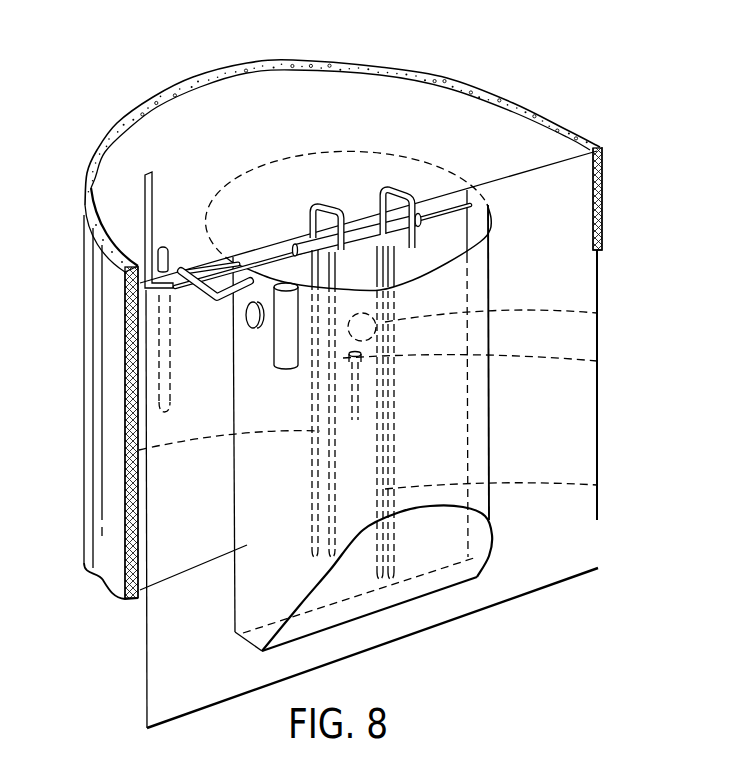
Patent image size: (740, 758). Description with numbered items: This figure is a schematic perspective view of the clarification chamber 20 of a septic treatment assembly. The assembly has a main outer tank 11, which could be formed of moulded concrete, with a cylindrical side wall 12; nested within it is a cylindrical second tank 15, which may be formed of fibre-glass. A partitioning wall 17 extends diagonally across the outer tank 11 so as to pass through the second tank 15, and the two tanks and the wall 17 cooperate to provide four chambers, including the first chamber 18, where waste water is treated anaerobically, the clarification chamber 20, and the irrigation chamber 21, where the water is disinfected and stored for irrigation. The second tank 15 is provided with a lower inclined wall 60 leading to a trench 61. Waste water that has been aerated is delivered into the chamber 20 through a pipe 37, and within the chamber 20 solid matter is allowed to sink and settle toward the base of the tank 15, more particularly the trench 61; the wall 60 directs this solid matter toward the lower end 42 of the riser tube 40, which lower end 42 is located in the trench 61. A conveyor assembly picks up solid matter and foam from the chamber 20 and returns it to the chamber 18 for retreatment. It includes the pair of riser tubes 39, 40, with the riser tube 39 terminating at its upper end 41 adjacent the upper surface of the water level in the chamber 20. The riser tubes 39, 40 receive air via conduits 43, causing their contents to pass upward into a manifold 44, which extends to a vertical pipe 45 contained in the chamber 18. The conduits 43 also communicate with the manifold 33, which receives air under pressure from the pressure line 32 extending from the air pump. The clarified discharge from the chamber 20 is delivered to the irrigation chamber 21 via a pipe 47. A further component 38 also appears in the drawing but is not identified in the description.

The main outer tank 11 is at (489, 78).
The cylindrical side wall 12 is at (433, 72).
The second tank 15 is at (493, 222).
The partitioning wall 17 is at (503, 176).
The first chamber 18 is at (300, 100).
The clarification chamber 20 is at (447, 257).
The irrigation chamber 21 is at (413, 148).
The pressure line 32 is at (144, 203).
The manifold 33 is at (303, 237).
The pipe 37 is at (246, 318).
The plate 38 is at (300, 538).
The riser tube 39 is at (137, 450).
The riser tube 40 is at (597, 485).
The upper end 41 is at (597, 361).
The lower end 42 is at (430, 593).
The conduits 43 is at (360, 443).
The manifold 44 is at (450, 244).
The vertical pipe 45 is at (159, 354).
The pipe 47 is at (597, 313).
The lower inclined wall 60 is at (490, 553).
The trench 61 is at (243, 647).